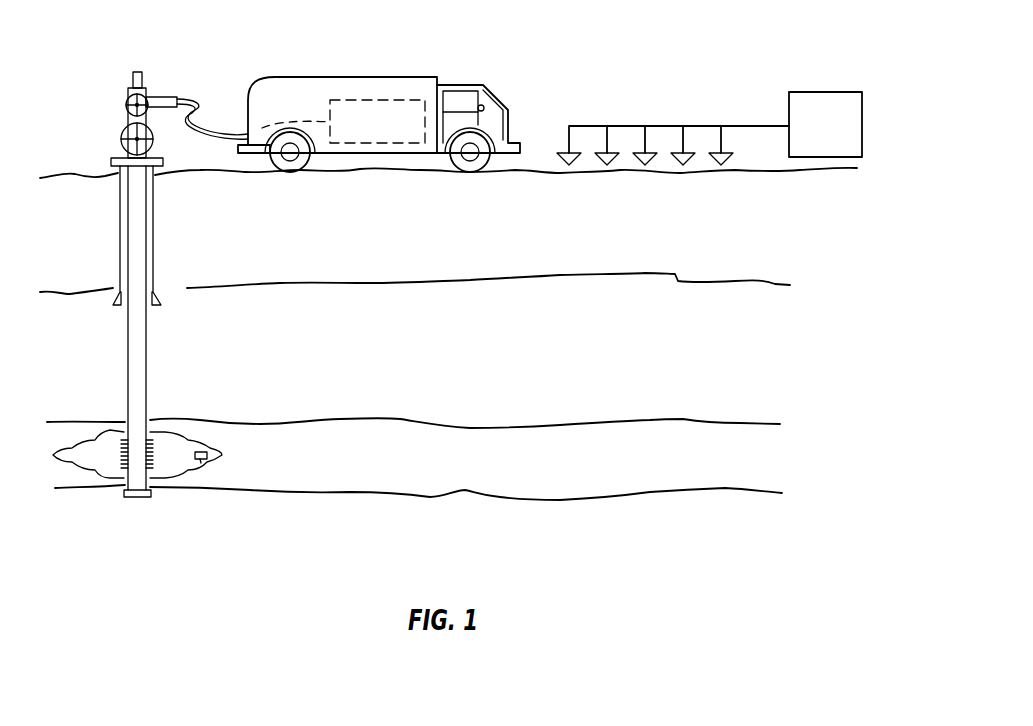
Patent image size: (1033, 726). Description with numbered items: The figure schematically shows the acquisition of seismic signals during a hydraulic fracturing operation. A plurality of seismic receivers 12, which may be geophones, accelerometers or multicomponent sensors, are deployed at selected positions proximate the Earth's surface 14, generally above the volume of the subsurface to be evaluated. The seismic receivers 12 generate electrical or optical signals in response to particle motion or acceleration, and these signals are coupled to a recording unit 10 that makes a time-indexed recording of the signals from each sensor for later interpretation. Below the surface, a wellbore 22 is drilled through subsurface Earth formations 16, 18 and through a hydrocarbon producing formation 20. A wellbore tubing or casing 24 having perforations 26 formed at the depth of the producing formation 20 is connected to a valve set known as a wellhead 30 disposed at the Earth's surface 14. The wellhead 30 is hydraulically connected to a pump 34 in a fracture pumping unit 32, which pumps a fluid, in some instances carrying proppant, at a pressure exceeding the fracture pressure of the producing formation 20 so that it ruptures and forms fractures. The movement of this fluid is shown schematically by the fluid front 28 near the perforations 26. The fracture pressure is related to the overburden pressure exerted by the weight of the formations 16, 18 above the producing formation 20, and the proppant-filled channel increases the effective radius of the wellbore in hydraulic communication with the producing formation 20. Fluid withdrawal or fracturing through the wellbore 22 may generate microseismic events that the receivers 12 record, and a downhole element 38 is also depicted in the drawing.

The recording unit 10 is at (826, 92).
The seismic receivers 12 is at (556, 167).
The Earth's surface 14 is at (497, 173).
The subsurface Earth formation 16 is at (355, 237).
The subsurface Earth formation 18 is at (355, 348).
The hydrocarbon producing formation 20 is at (355, 475).
The wellbore 22 is at (153, 229).
The wellbore tubing or casing 24 is at (147, 350).
The perforations 26 is at (155, 453).
The fluid front 28 is at (215, 455).
The wellhead 30 is at (172, 97).
The fracture pumping unit 32 is at (310, 77).
The pump 34 is at (352, 100).
The downhole sensor 38 is at (200, 462).